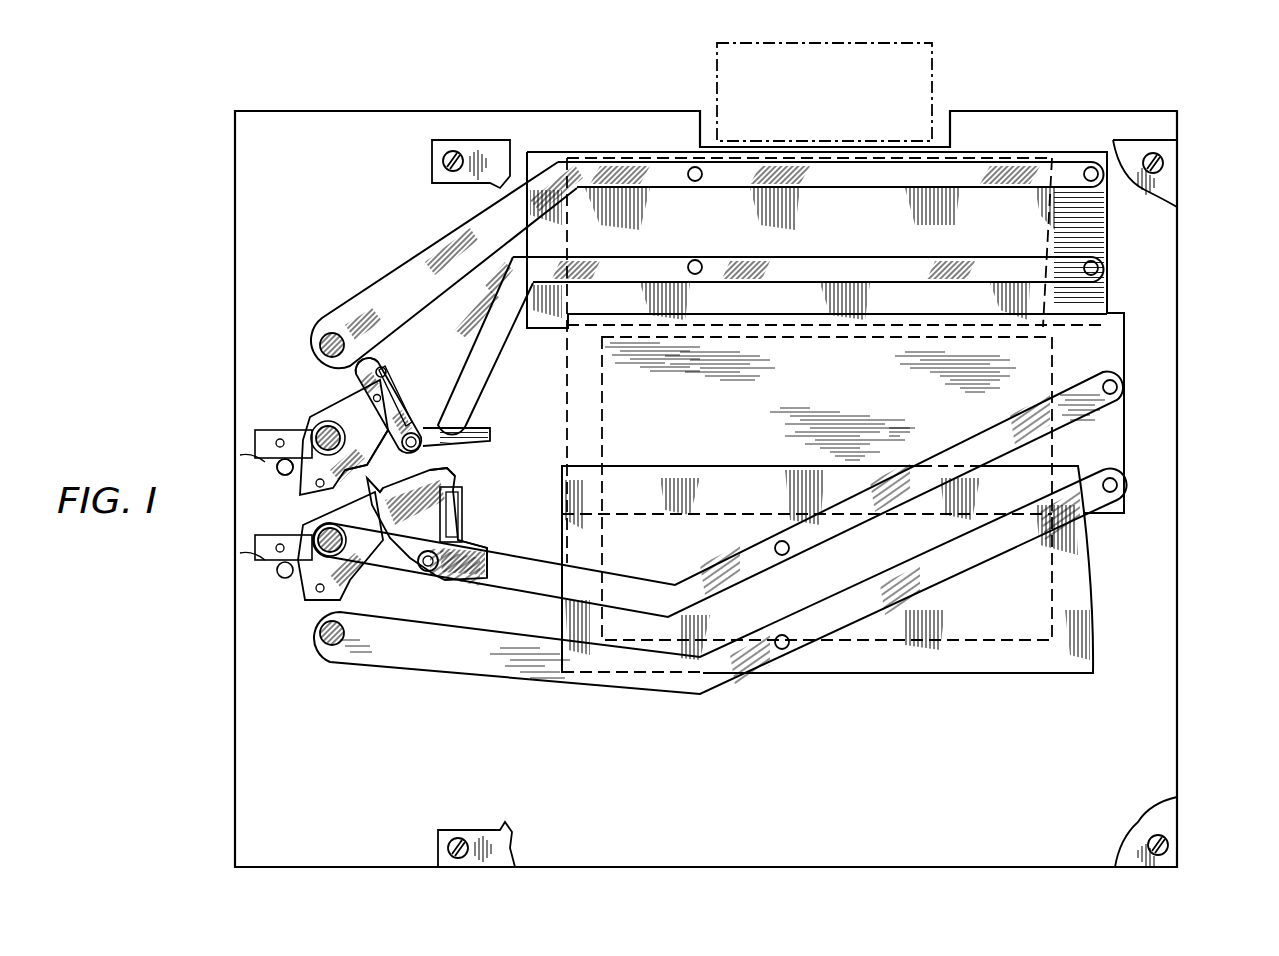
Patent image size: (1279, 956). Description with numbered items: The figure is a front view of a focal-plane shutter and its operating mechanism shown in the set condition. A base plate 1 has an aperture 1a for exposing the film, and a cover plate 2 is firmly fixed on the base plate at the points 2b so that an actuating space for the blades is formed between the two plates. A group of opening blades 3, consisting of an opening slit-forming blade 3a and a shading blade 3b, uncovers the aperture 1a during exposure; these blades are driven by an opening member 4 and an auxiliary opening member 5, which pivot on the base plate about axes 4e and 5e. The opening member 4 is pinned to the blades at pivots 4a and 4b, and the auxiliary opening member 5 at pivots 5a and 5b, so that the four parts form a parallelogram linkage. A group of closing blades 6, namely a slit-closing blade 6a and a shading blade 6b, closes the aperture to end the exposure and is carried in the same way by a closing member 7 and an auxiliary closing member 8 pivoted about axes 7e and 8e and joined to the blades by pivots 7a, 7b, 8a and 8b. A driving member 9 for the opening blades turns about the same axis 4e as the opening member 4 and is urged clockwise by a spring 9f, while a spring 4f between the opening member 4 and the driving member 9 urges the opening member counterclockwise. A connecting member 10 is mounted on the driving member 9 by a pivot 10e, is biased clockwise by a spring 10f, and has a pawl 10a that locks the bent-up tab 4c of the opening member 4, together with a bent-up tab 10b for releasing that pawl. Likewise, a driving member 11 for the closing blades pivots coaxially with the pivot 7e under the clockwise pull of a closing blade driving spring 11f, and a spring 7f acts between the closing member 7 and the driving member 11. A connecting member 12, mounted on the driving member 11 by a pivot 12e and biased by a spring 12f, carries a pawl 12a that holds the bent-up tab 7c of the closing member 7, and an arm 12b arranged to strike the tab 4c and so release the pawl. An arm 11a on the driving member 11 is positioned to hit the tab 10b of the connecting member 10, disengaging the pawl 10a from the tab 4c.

The base plate 1 is at (1162, 657).
The aperture 1a is at (992, 642).
The cover plate 2 is at (1160, 812).
The fixing points 2b is at (441, 160).
The group of opening blades 3 is at (1230, 385).
The opening slit-forming blade 3a is at (1117, 432).
The shading blade 3b is at (1075, 473).
The opening member 4 is at (1068, 405).
The pivot 4a is at (1118, 384).
The pivot 4b is at (775, 546).
The bent-up tab 4c is at (462, 492).
The axis 4e is at (343, 542).
The spring 4f is at (316, 565).
The auxiliary opening member 5 is at (1093, 500).
The pivot 5a is at (1118, 488).
The pivot 5b is at (782, 635).
The axis 5e is at (330, 645).
The group of closing blades 6 is at (1230, 180).
The slit-closing blade 6a is at (1104, 209).
The shading blade 6b is at (1050, 232).
The closing member 7 is at (1065, 263).
The pivot 7a is at (1099, 268).
The pivot 7b is at (695, 260).
The bent-up tab 7c is at (384, 365).
The axis 7e is at (318, 432).
The spring 7f is at (298, 474).
The auxiliary closing member 8 is at (1057, 165).
The pivot 8a is at (1091, 166).
The pivot 8b is at (695, 182).
The axis 8e is at (332, 333).
The driving member 9 is at (380, 562).
The spring 9f is at (284, 578).
The connecting member 10 is at (415, 562).
The pawl 10a is at (447, 474).
The bent-up tab 10b is at (350, 500).
The pivot 10e is at (432, 572).
The spring 10f is at (490, 576).
The driving member 11 is at (345, 425).
The arm 11a is at (408, 470).
The closing blade driving spring 11f is at (280, 460).
The connecting member 12 is at (355, 405).
The pawl 12a is at (365, 362).
The arm 12b is at (491, 437).
The pivot 12e is at (418, 435).
The spring 12f is at (402, 390).